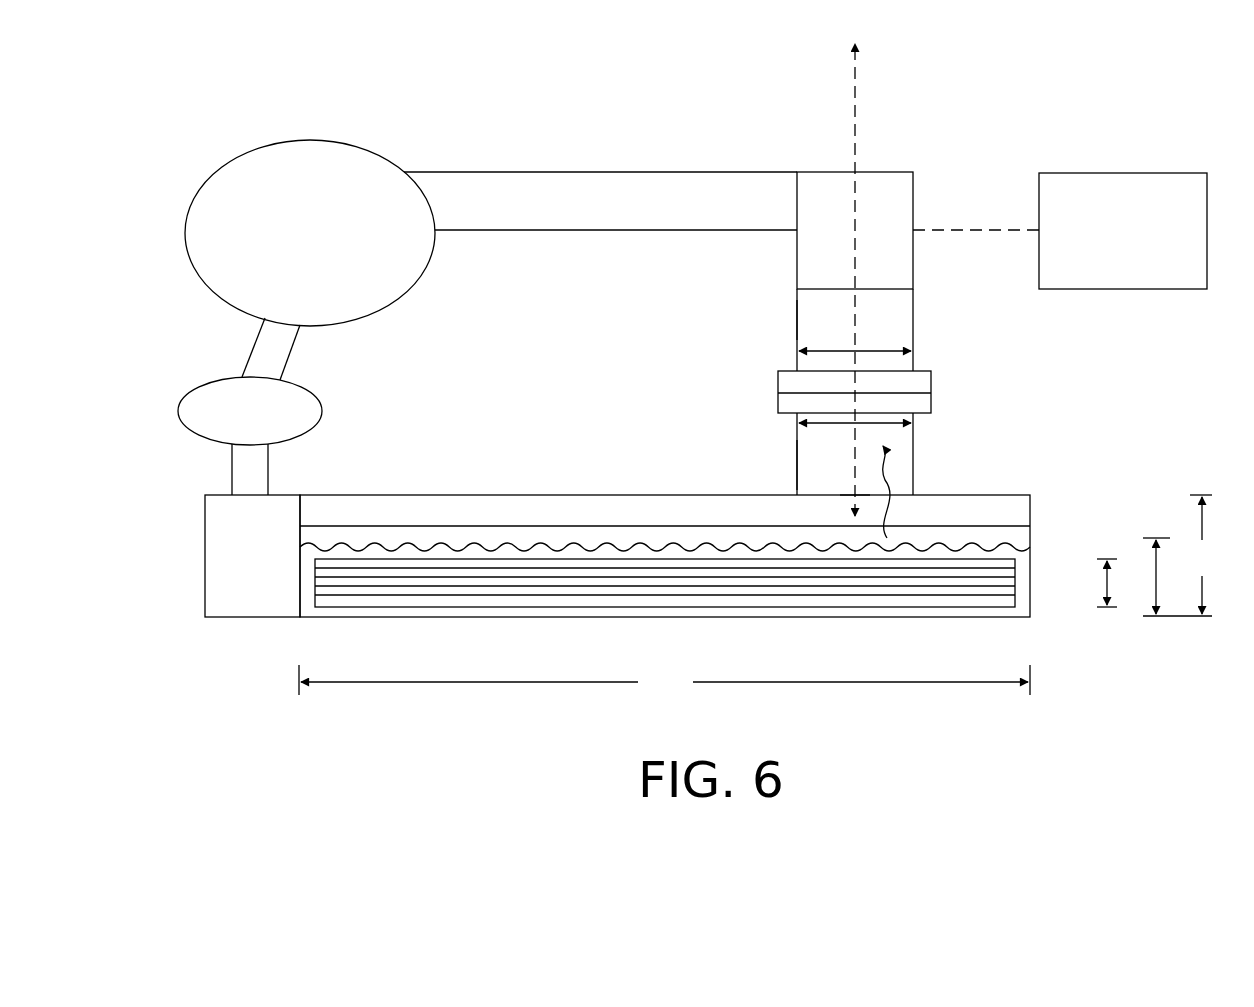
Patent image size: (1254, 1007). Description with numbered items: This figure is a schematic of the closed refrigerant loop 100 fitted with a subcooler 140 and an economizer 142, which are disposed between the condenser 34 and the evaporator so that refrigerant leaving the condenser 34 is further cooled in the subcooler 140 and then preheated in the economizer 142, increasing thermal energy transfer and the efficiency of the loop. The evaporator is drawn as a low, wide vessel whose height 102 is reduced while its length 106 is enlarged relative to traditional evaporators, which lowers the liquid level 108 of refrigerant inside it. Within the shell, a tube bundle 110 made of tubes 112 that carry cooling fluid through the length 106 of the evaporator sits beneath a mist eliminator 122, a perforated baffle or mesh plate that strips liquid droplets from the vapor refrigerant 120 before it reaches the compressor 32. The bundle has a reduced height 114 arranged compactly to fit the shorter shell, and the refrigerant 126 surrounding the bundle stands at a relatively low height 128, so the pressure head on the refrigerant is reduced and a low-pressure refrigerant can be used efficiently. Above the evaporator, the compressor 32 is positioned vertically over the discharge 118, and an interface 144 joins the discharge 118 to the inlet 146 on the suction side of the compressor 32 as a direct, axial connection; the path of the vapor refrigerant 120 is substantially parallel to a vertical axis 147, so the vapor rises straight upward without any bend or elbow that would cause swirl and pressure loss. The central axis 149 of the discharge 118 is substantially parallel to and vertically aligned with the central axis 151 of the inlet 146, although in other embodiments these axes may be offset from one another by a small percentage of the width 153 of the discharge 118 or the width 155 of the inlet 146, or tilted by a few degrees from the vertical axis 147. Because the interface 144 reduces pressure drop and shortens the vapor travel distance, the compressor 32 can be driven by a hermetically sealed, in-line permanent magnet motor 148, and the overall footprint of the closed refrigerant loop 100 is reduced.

The closed refrigerant loop 100 is at (690, 116).
The compressor 32 is at (913, 200).
The condenser 34 is at (310, 140).
The subcooler 140 is at (322, 410).
The economizer 142 is at (205, 547).
The interface 144 is at (746, 392).
The inlet 146 is at (913, 332).
The vertical axis 147 is at (855, 108).
The hermetically sealed, in-line permanent magnet motor 148 is at (1123, 173).
The central axis of the discharge 149 is at (855, 472).
The central axis of the inlet 151 is at (855, 318).
The width of the discharge 153 is at (842, 424).
The width of the inlet 155 is at (880, 350).
The discharge 118 is at (797, 460).
The vapor refrigerant 120 is at (893, 462).
The mist eliminator 122 is at (968, 526).
The liquid level 108 is at (1008, 547).
The tube bundle 110 is at (875, 608).
The tubes 112 is at (688, 569).
The height of the tube bundle 114 is at (1098, 583).
The refrigerant 126 is at (1022, 586).
The height of the refrigerant 128 is at (1152, 578).
The height of the evaporator 102 is at (1203, 554).
The length of the evaporator 106 is at (664, 680).